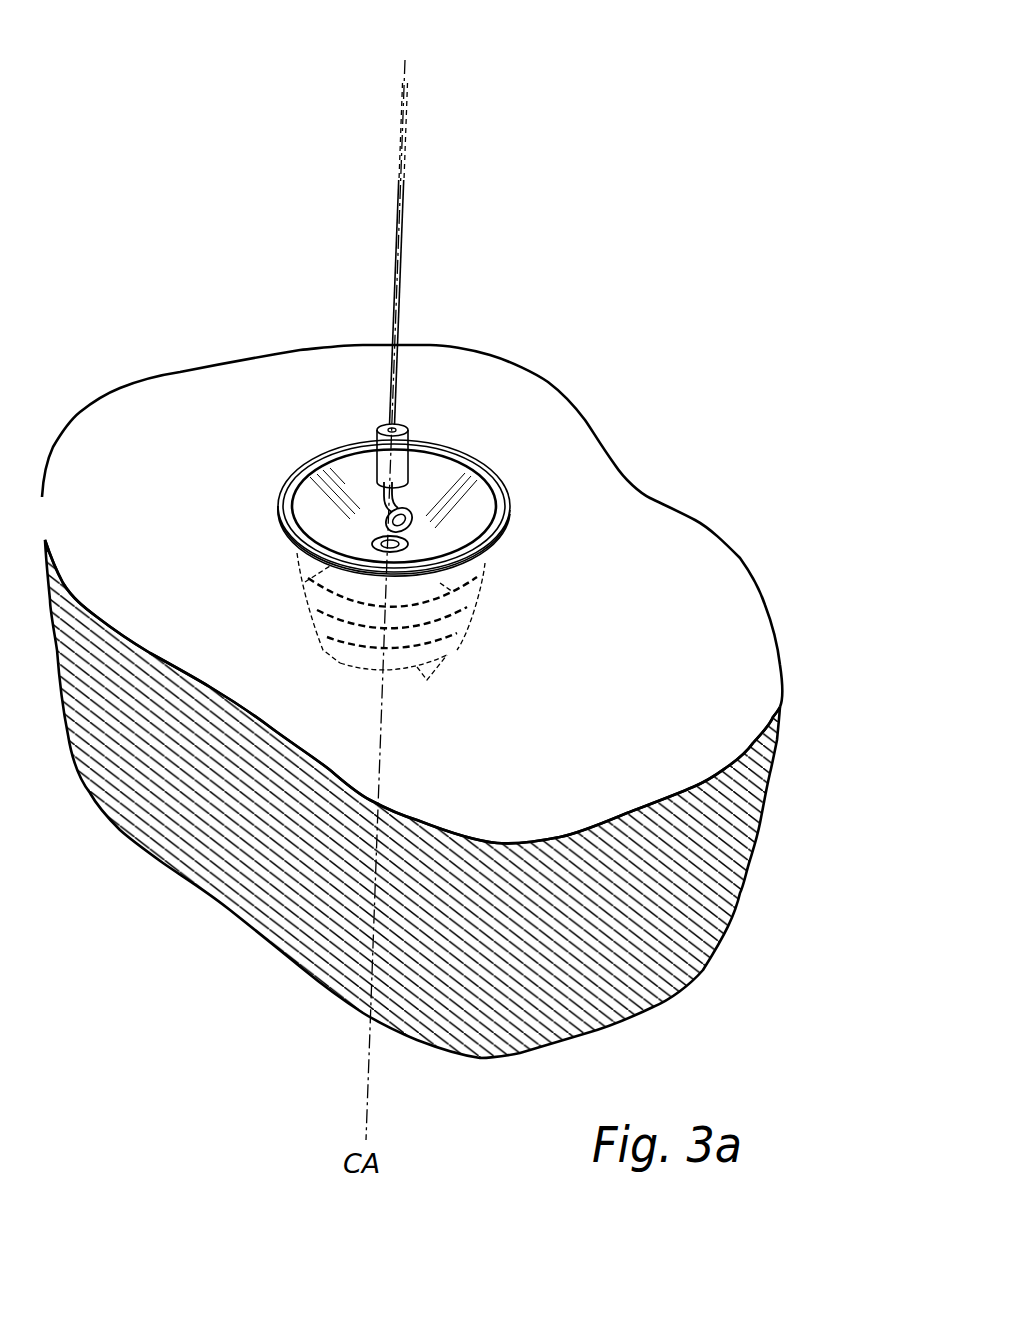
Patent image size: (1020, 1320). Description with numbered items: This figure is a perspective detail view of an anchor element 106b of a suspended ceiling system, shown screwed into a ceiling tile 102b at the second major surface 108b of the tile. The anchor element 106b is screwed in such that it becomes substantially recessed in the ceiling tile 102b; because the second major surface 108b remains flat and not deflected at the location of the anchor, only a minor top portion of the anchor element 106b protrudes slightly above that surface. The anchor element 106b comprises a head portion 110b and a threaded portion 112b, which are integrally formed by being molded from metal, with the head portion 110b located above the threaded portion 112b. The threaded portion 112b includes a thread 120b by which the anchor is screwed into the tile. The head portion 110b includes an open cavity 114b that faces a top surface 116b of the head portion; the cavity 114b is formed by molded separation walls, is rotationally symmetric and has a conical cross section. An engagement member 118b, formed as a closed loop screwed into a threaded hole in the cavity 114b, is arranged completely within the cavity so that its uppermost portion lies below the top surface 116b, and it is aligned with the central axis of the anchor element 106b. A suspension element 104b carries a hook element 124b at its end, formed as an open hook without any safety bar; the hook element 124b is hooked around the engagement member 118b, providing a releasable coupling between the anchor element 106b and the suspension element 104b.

The ceiling tile 102b is at (435, 667).
The suspension element 104b is at (400, 277).
The anchor element 106b is at (519, 541).
The second major surface 108b is at (257, 400).
The head portion 110b is at (452, 541).
The threaded portion 112b is at (318, 657).
The cavity 114b is at (353, 487).
The top surface 116b is at (480, 551).
The engagement member 118b is at (377, 520).
The thread 120b is at (443, 627).
The hook element 124b is at (408, 465).